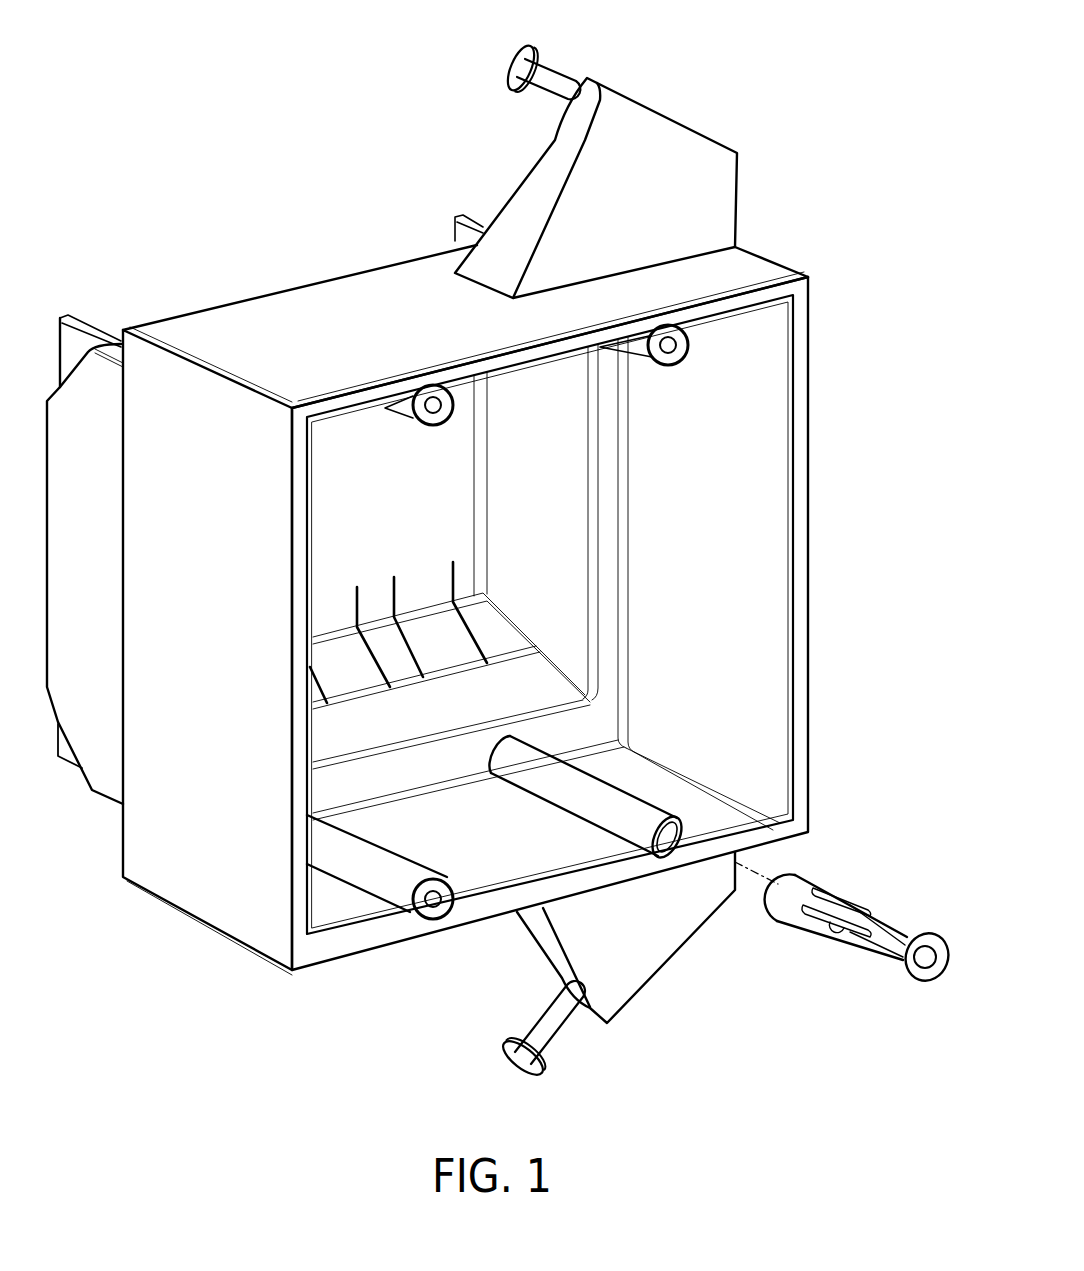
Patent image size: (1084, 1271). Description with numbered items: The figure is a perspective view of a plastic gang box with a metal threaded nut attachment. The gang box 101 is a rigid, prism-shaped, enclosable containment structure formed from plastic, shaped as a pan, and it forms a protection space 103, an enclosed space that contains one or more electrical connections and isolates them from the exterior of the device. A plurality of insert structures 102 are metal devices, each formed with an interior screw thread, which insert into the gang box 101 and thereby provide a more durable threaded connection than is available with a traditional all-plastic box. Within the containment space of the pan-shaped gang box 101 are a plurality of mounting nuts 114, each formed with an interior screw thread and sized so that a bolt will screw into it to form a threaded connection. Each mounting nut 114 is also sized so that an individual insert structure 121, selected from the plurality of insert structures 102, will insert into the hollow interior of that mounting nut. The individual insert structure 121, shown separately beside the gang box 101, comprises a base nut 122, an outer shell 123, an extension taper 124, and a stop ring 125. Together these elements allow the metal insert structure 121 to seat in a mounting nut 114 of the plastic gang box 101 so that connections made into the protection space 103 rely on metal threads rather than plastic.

The gang box 101 is at (149, 183).
The plurality of insert structures 102 is at (412, 907).
The protection space 103 is at (745, 476).
The plurality of mounting nuts 114 is at (590, 803).
The individual insert structure 121 is at (860, 931).
The base nut 122 is at (823, 925).
The outer shell 123 is at (790, 885).
The extension taper 124 is at (863, 927).
The stop ring 125 is at (935, 980).